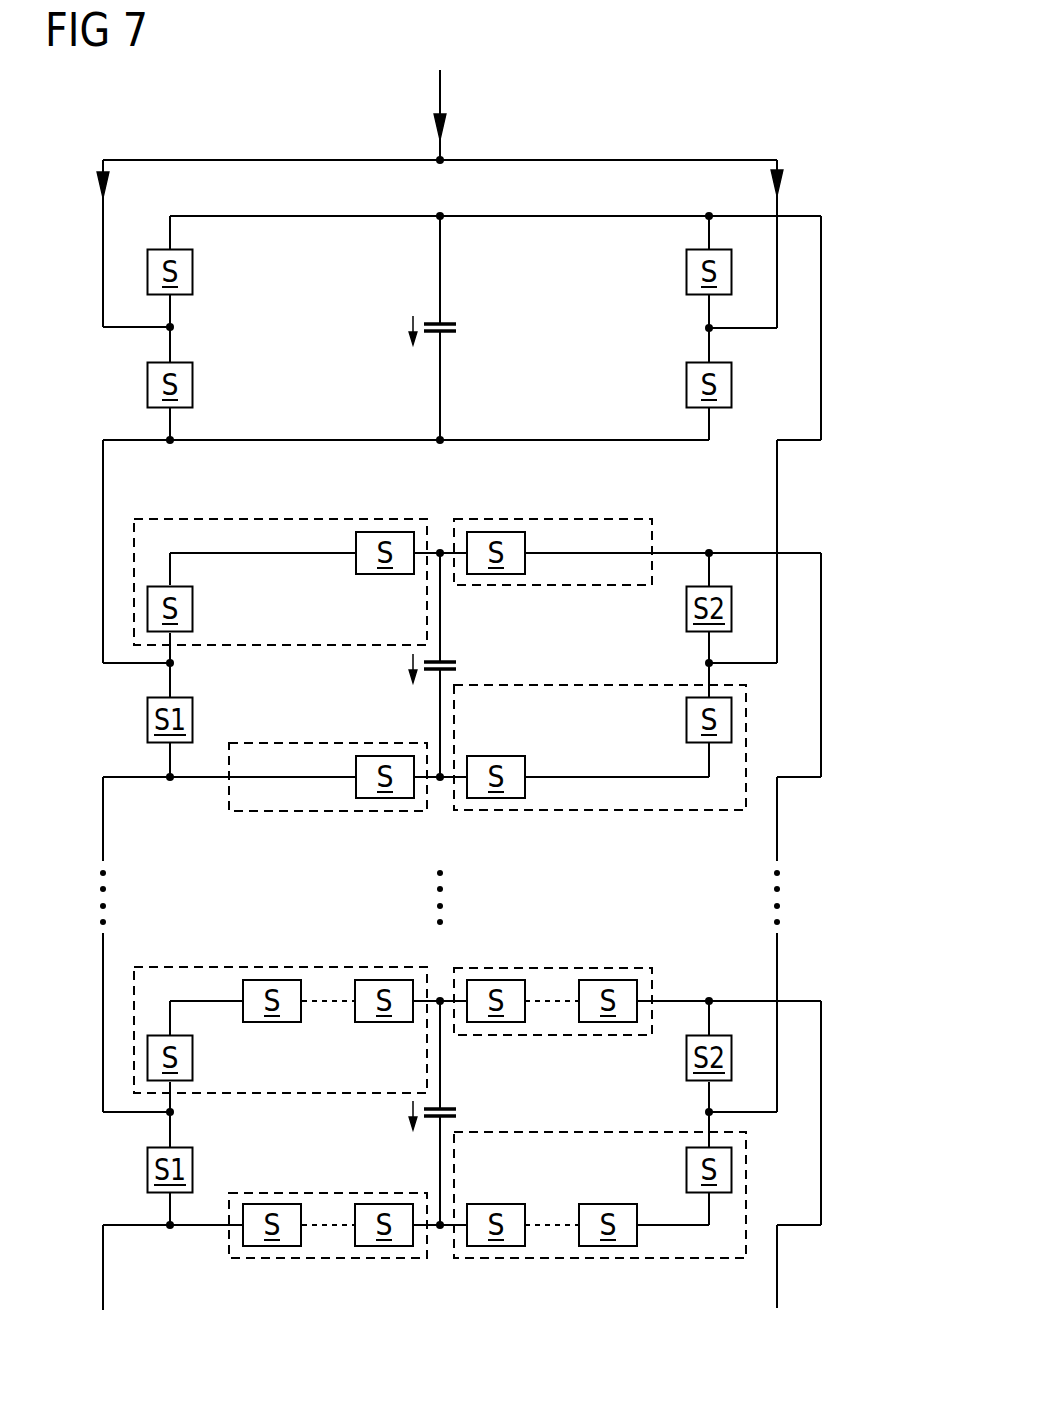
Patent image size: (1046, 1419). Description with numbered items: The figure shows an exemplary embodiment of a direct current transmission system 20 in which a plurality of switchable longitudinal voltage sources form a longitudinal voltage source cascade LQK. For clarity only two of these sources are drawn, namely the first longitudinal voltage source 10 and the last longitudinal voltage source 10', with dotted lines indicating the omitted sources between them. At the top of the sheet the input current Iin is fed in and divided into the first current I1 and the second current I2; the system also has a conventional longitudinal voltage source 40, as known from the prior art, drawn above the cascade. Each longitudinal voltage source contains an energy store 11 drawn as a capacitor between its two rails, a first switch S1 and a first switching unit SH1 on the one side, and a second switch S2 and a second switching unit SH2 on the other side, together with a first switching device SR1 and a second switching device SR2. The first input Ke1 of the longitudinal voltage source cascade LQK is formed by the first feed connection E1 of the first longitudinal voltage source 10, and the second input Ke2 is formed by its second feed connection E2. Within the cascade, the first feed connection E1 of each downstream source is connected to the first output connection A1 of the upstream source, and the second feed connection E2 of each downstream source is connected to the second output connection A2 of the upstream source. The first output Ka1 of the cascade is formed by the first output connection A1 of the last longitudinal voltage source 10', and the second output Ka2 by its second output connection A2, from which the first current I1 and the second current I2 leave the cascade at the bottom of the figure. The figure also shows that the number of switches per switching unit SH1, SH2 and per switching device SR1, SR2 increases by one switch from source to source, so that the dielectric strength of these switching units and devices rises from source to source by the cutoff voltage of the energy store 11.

The input current Iin is at (457, 117).
The longitudinal voltage source 40 is at (833, 182).
The energy store 11 is at (457, 327).
The direct current transmission system 20 is at (100, 690).
The longitudinal voltage source cascade LQK is at (809, 867).
The first longitudinal voltage source 10 is at (494, 665).
The last longitudinal voltage source 10' is at (497, 1113).
The first switching device SR1 is at (223, 519).
The first switching unit SH1 is at (317, 811).
The second switching device SR2 is at (660, 810).
The second switching unit SH2 is at (540, 519).
The first switch S1 is at (170, 945).
The second switch S2 is at (709, 834).
The first input of the longitudinal voltage source cascade Ke1 is at (170, 663).
The second input of the longitudinal voltage source cascade Ke2 is at (709, 663).
The first feed connection E1 is at (170, 1112).
The second feed connection E2 is at (709, 1112).
The first output connection A1 is at (170, 777).
The second output connection A2 is at (709, 553).
The first output of the longitudinal voltage source cascade Ka1 is at (170, 1225).
The second output of the longitudinal voltage source cascade Ka2 is at (709, 1001).
The first current I1 is at (118, 1267).
The second current I2 is at (793, 1266).